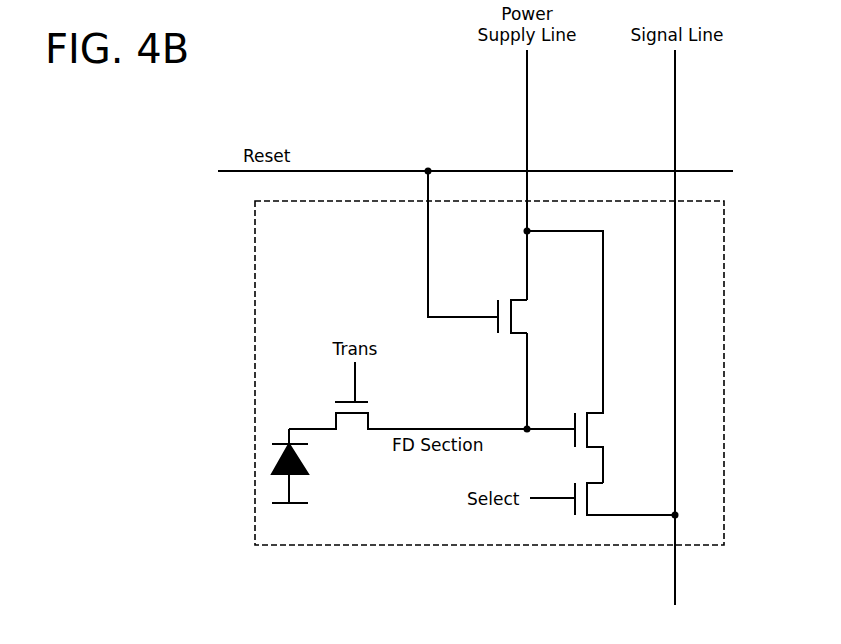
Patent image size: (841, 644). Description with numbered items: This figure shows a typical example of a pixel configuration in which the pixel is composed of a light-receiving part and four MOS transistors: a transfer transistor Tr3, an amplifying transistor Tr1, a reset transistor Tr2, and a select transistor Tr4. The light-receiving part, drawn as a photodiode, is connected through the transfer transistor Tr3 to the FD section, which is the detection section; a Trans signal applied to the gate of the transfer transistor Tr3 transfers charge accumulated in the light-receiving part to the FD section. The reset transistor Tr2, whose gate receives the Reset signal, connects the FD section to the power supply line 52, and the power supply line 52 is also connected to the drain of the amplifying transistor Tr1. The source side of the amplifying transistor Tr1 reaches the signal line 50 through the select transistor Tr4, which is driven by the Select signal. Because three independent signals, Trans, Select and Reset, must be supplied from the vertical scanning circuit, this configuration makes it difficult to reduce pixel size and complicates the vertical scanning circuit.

The power supply line 52 is at (530, 89).
The signal line 50 is at (678, 89).
The amplifying transistor Tr1 is at (596, 431).
The reset transistor Tr2 is at (522, 318).
The transfer transistor Tr3 is at (354, 418).
The select transistor Tr4 is at (596, 499).